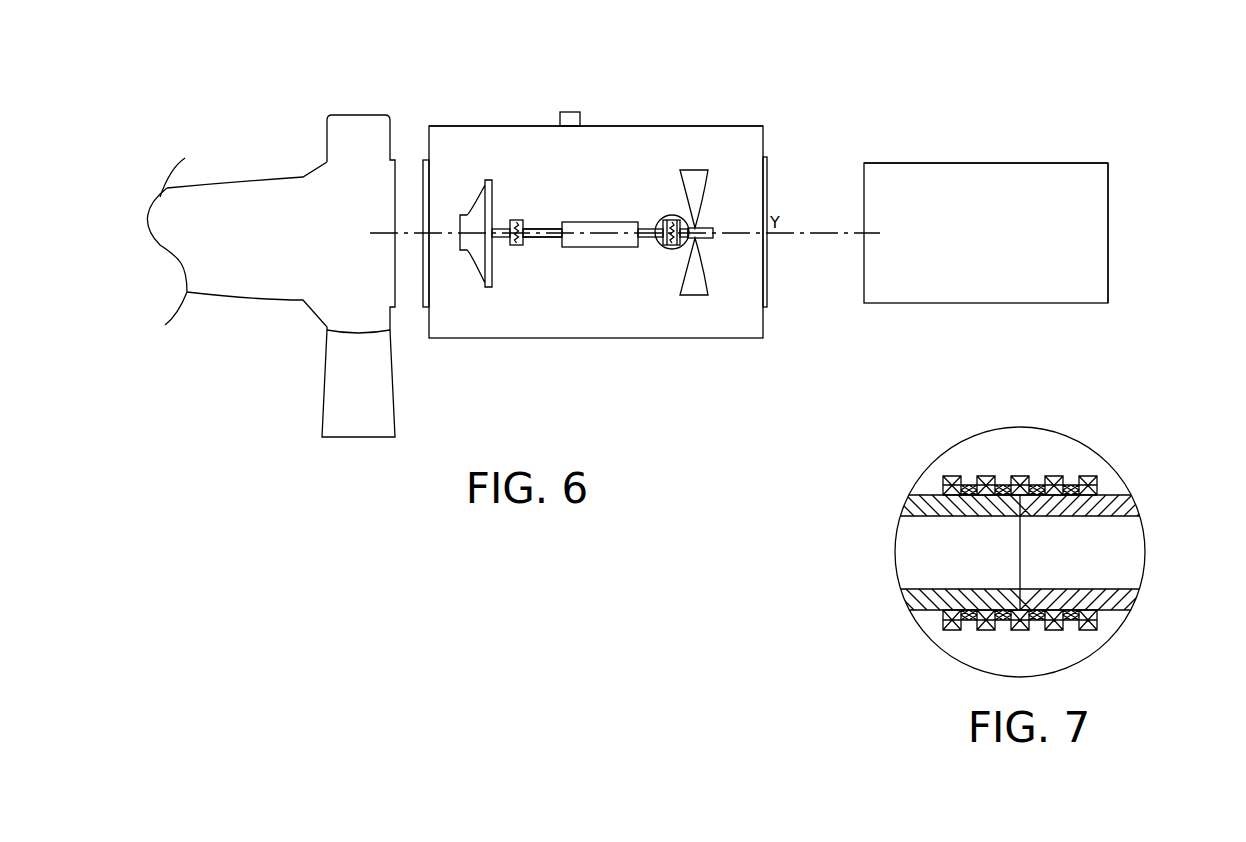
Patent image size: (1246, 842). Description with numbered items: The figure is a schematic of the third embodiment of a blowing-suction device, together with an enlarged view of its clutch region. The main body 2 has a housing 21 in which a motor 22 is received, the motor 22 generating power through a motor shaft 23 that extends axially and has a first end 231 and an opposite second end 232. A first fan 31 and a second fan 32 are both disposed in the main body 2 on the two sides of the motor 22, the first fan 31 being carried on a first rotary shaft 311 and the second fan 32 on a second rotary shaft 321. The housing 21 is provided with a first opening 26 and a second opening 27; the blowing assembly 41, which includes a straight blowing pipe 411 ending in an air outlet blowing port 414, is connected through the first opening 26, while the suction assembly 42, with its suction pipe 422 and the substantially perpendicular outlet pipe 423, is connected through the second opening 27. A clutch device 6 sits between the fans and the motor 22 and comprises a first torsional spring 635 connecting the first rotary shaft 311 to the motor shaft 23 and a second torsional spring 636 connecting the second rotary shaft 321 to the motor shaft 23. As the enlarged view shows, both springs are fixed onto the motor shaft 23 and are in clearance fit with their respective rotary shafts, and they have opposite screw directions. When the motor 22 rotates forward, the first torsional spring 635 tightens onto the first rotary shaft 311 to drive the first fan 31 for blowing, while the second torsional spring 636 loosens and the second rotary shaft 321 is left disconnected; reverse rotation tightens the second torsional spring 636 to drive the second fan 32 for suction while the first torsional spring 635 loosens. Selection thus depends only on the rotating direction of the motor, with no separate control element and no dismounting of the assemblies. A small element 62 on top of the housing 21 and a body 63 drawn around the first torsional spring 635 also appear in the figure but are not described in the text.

In FIG. 6, the main body 2 is at (723, 140).
In FIG. 6, the housing 21 is at (655, 125).
In FIG. 6, the motor 22 is at (590, 223).
In FIG. 6, the motor shaft 23 is at (558, 227).
In FIG. 7, the motor shaft 23 is at (912, 532).
In FIG. 6, the first end 231 is at (652, 228).
In FIG. 6, the second end 232 is at (546, 232).
In FIG. 6, the first opening 26 is at (765, 155).
In FIG. 6, the second opening 27 is at (425, 158).
In FIG. 6, the first fan 31 is at (697, 290).
In FIG. 6, the first rotary shaft 311 is at (699, 229).
In FIG. 7, the first rotary shaft 311 is at (1115, 537).
In FIG. 6, the second fan 32 is at (488, 284).
In FIG. 6, the second rotary shaft 321 is at (495, 228).
In FIG. 6, the blowing assembly 41 is at (925, 142).
In FIG. 6, the blowing pipe 411 is at (1075, 175).
In FIG. 6, the air outlet blowing port 414 is at (1108, 182).
In FIG. 6, the suction assembly 42 is at (230, 218).
In FIG. 6, the suction pipe 422 is at (215, 275).
In FIG. 6, the outlet pipe 423 is at (342, 410).
In FIG. 6, the clutch device 6 is at (648, 256).
In FIG. 6, the switch 62 is at (563, 110).
In FIG. 6, the coupling body 63 is at (655, 226).
In FIG. 6, the first torsional spring 635 is at (670, 247).
In FIG. 7, the first torsional spring 635 is at (1065, 478).
In FIG. 6, the second torsional spring 636 is at (522, 246).